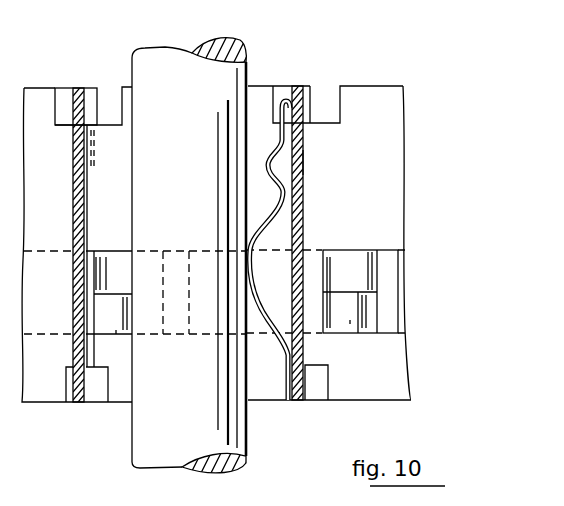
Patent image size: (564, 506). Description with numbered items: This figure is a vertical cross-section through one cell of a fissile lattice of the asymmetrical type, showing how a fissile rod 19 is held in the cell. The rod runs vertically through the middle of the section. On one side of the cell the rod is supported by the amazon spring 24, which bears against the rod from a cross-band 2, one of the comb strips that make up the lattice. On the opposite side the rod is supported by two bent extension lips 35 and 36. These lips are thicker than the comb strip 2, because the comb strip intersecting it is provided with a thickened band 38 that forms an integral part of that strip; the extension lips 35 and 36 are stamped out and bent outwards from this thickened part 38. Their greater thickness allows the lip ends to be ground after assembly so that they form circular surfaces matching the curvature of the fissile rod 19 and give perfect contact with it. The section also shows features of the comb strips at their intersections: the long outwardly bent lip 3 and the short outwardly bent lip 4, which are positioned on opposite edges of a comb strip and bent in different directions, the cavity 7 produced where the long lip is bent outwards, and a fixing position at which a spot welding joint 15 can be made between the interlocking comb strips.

The cross-band 2 is at (304, 162).
The long outwardly bent lip 3 is at (302, 86).
The short outwardly bent lip 4 is at (63, 385).
The cavity 7 is at (326, 104).
The spot welding joint 15 is at (63, 95).
The fissile rod 19 is at (183, 131).
The amazon spring 24 is at (282, 203).
The bent extension lip 35 is at (116, 334).
The bent extension lip 36 is at (115, 262).
The thickened band 38 is at (50, 265).